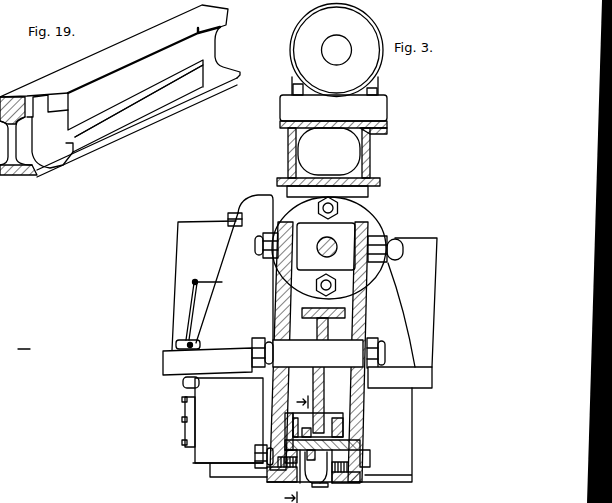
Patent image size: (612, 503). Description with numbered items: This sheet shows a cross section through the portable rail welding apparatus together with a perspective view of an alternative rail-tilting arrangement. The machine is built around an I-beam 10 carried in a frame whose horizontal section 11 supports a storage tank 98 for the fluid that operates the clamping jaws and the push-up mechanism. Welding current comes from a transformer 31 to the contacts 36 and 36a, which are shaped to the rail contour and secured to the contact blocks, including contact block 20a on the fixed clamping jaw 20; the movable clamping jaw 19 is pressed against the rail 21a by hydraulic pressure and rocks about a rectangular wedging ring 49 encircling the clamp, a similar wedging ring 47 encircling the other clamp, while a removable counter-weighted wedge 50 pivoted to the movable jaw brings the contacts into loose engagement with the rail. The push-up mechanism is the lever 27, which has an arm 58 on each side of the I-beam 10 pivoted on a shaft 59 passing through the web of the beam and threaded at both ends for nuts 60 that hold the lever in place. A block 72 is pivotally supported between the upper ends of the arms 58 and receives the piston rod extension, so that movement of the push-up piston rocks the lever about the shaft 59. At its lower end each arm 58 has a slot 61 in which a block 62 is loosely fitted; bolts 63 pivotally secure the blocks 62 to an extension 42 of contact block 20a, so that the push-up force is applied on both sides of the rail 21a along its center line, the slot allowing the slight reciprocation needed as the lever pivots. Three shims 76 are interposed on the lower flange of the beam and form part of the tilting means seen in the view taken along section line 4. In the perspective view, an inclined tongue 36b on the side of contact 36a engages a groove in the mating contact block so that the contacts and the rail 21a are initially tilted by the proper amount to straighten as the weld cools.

In FIG. 3, the section line 4— 4 is at (292, 446).
In FIG. 3, the I-beam 10 is at (323, 398).
In FIG. 3, the horizontal section 11 is at (372, 153).
In FIG. 3, the clamping jaw 19 is at (228, 256).
In FIG. 3, the clamping jaw 20 is at (400, 292).
In FIG. 3, the contact block 20a is at (345, 428).
In FIG. 19, the rail 21a is at (10, 170).
In FIG. 3, the rail 21a is at (315, 483).
In FIG. 3, the lever 27 is at (384, 316).
In FIG. 3, the transformer 31 is at (202, 226).
In FIG. 3, the contact 36 is at (308, 483).
In FIG. 19, the contact 36a is at (55, 148).
In FIG. 3, the contact 36a is at (343, 481).
In FIG. 19, the tongue 36b is at (143, 101).
In FIG. 3, the extension 42 is at (288, 482).
In FIG. 3, the wedging ring 47 is at (16, 347).
In FIG. 3, the wedging ring 49 is at (432, 379).
In FIG. 3, the counter-weighted wedge 50 is at (185, 340).
In FIG. 3, the arm 58 is at (279, 290).
In FIG. 3, the shaft 59 is at (263, 357).
In FIG. 3, the nut 60 is at (385, 348).
In FIG. 3, the slot 61 is at (287, 422).
In FIG. 3, the block 62 is at (285, 446).
In FIG. 3, the bolt 63 is at (254, 451).
In FIG. 3, the block 72 is at (342, 232).
In FIG. 3, the shim 76 is at (320, 420).
In FIG. 3, the storage tank 98 is at (352, 168).